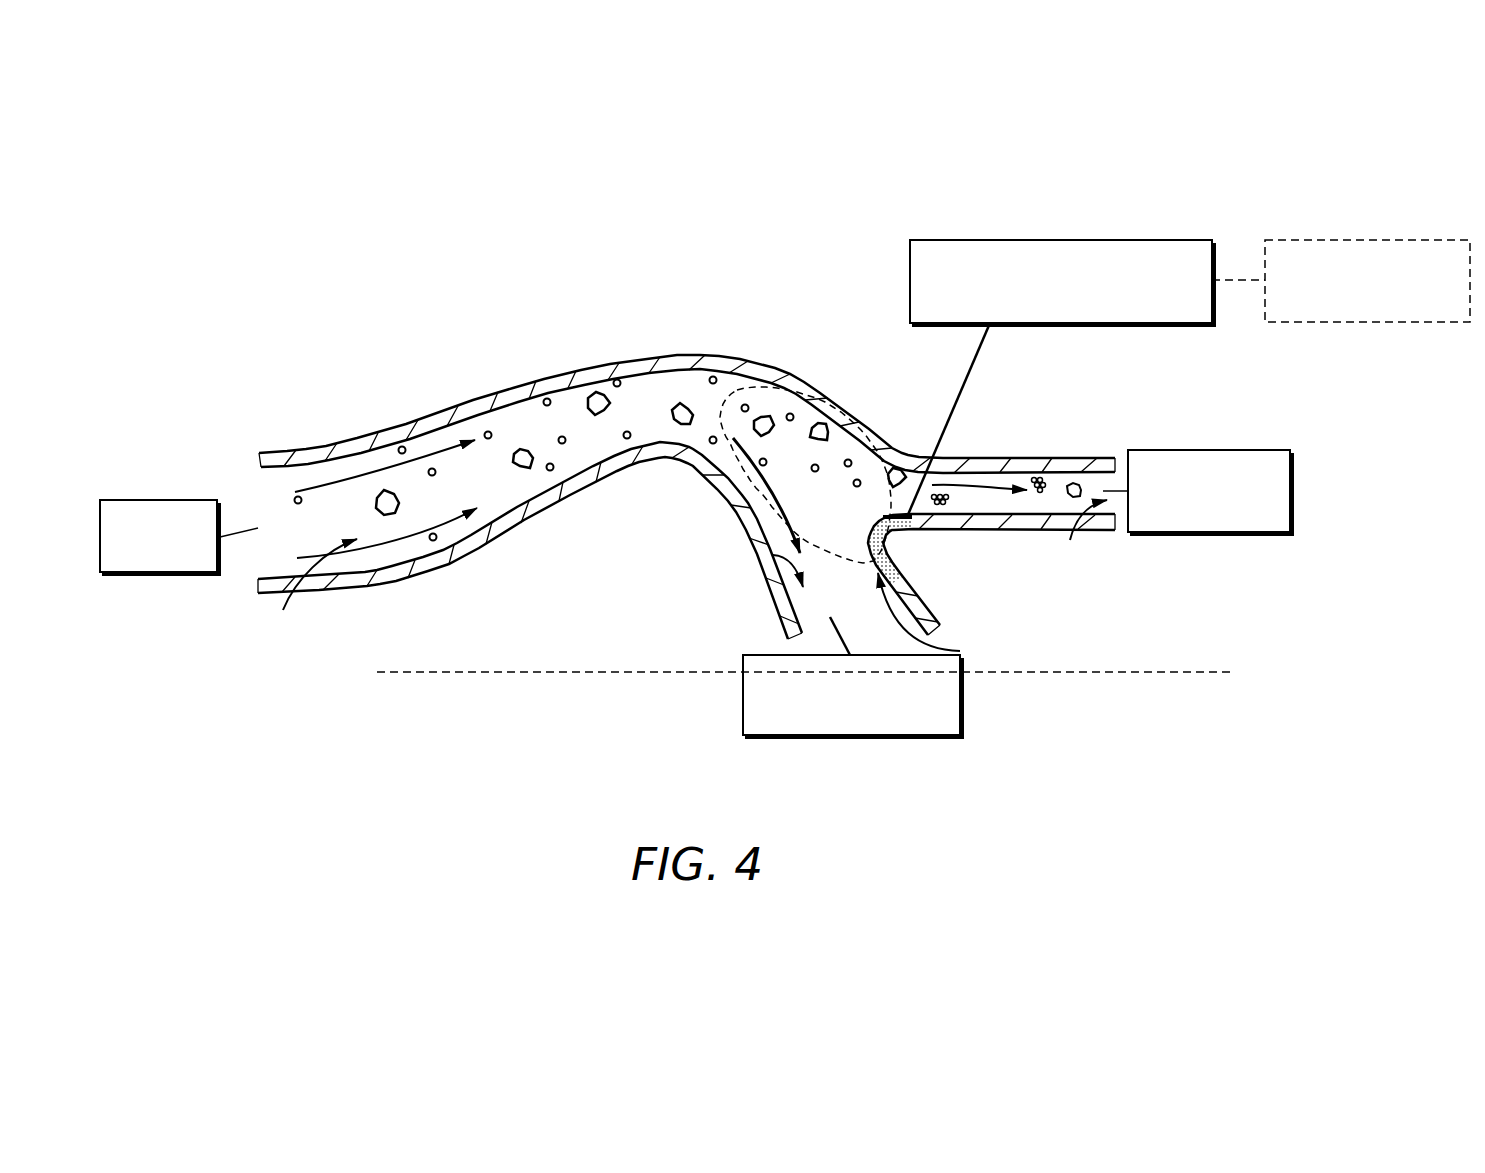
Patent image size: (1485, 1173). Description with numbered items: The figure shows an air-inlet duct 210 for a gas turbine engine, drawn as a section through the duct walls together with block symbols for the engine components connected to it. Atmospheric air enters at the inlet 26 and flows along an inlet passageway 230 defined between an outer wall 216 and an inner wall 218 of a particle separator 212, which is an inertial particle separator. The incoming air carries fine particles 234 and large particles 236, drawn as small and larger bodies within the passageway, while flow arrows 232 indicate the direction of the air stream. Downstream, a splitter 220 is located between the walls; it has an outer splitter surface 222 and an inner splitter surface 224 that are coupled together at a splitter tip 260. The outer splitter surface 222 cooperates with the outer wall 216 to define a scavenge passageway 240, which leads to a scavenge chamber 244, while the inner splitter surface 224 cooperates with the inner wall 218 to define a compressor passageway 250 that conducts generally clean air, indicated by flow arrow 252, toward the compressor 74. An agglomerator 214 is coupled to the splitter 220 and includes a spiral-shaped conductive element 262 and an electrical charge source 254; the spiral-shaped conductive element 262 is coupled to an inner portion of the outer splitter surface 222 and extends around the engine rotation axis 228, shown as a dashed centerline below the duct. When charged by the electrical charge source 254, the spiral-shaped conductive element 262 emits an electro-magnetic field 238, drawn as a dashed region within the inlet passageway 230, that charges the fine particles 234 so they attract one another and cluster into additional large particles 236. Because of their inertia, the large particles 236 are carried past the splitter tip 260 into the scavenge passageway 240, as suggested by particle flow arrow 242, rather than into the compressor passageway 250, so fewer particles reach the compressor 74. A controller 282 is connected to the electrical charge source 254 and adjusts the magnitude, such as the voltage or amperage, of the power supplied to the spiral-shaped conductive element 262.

The inlet 26 is at (160, 500).
The compressor 74 is at (851, 739).
The air-inlet duct 210 is at (693, 272).
The particle separator 212 is at (818, 375).
The agglomerator 214 is at (895, 540).
The outer wall 216 is at (400, 428).
The inner wall 218 is at (480, 542).
The splitter 220 is at (903, 515).
The outer splitter surface 222 is at (1057, 507).
The inner splitter surface 224 is at (935, 612).
The engine rotation axis 228 is at (410, 679).
The inlet passageway 230 is at (368, 541).
The airflow stream 232 is at (373, 547).
The fine particles 234 is at (548, 395).
The large particles 236 is at (600, 380).
The electro-magnetic field 238 is at (737, 390).
The scavenge passageway 240 is at (1077, 538).
The particle flow 242 is at (995, 485).
The scavenge chamber 244 is at (1213, 450).
The compressor passageway 250 is at (773, 555).
The core airflow 252 is at (758, 475).
The electrical charge source 254 is at (1063, 240).
The splitter tip 260 is at (960, 651).
The spiral-shaped conductive element 262 is at (873, 515).
The controller 282 is at (1395, 240).